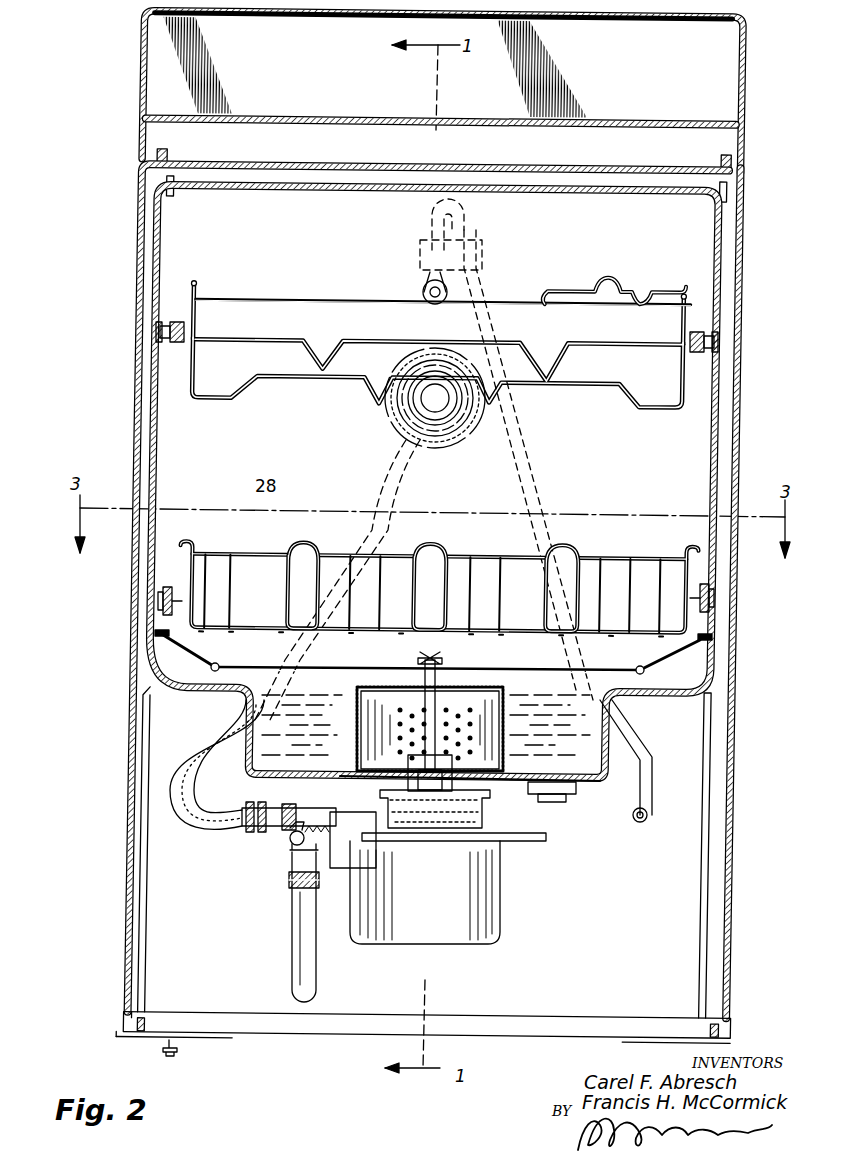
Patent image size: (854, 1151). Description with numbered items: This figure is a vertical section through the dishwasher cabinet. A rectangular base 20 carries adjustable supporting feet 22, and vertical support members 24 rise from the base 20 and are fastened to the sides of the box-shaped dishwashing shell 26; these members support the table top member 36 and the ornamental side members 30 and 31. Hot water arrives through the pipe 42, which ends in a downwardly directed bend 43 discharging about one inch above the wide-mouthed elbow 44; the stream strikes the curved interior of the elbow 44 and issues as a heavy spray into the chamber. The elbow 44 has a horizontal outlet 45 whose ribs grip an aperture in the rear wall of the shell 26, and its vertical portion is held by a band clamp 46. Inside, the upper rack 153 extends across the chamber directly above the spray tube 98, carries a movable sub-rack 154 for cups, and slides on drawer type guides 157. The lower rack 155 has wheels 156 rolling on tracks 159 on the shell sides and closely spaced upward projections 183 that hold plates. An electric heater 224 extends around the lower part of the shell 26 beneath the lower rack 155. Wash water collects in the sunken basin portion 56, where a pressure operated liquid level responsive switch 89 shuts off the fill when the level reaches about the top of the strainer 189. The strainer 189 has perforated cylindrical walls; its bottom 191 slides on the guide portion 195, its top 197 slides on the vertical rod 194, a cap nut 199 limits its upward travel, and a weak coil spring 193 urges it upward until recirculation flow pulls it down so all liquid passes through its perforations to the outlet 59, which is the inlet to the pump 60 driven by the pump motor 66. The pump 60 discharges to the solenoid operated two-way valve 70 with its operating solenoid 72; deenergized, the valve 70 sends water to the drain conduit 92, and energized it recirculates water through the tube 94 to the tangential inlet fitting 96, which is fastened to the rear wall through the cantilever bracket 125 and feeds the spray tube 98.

The rectangular base 20 is at (278, 1020).
The adjustable supporting feet 22 is at (180, 1052).
The vertical support members 24 is at (168, 947).
The dishwashing shell 26 is at (165, 210).
The ornamental side member 30 is at (135, 380).
The ornamental side member 31 is at (745, 368).
The table top member 36 is at (716, 127).
The pipe 42 is at (650, 768).
The 180° bend 43 is at (428, 206).
The wide-mouthed elbow 44 is at (418, 248).
The horizontal outlet 45 is at (423, 290).
The band clamp 46 is at (470, 248).
The sunken basin portion 56 is at (252, 762).
The outlet 59 is at (480, 793).
The pump 60 is at (480, 842).
The pump motor 66 is at (470, 905).
The solenoid operated two-way valve 70 is at (314, 808).
The operating solenoid 72 is at (366, 858).
The pressure operated liquid level responsive switch 89 is at (555, 803).
The drain conduit 92 is at (317, 965).
The tube 94 is at (222, 740).
The tangential inlet fitting 96 is at (470, 430).
The spray tube 98 is at (415, 415).
The cantilever bracket 125 is at (432, 455).
The upper rack 153 is at (212, 400).
The movable sub-rack 154 is at (560, 290).
The lower rack 155 is at (232, 553).
The wheels 156 is at (160, 590).
The drawer type guides 157 is at (178, 322).
The tracks 159 is at (155, 636).
The upwardly extending projections 183 is at (303, 545).
The strainer 189 is at (498, 750).
The bottom of the strainer 191 is at (385, 780).
The compression type coil spring 193 is at (405, 718).
The vertical rod 194 is at (470, 667).
The guide portion 195 is at (408, 765).
The top of the strainer 197 is at (375, 685).
The cap nut 199 is at (438, 660).
The electric heater 224 is at (260, 665).